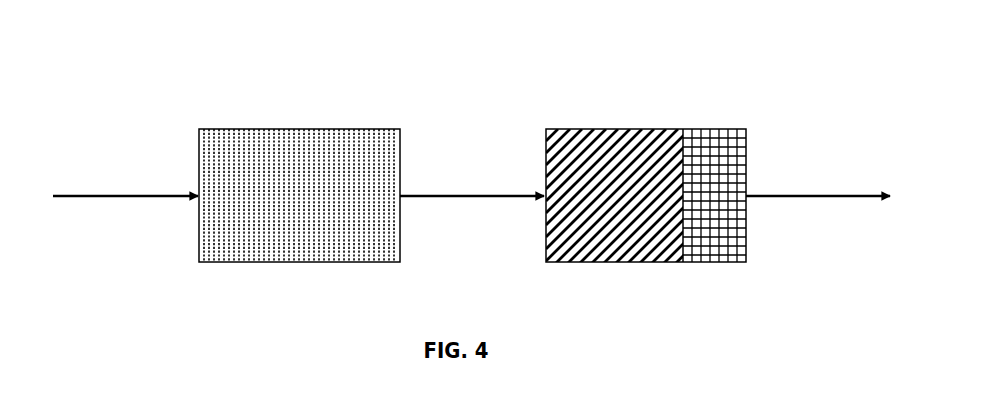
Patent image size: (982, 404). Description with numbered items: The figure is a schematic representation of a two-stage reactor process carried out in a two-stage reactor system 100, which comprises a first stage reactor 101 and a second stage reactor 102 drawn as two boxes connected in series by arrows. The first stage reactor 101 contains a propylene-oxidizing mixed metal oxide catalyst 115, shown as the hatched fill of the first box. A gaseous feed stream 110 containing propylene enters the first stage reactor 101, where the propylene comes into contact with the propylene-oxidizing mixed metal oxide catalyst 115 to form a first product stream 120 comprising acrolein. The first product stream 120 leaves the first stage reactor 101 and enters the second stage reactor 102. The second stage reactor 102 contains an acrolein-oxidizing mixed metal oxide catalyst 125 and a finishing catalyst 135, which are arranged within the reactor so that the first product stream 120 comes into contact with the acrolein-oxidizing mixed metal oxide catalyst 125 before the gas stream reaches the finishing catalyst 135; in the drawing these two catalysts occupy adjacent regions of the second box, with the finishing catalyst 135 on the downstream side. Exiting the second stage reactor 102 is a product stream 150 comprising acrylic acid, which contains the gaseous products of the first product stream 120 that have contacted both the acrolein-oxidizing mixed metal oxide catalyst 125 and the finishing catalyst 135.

The two-stage reactor system 100 is at (53, 40).
The first stage reactor 101 is at (299, 180).
The second stage reactor 102 is at (646, 180).
The gaseous feed stream 110 is at (125, 179).
The propylene-oxidizing mixed metal oxide catalyst 115 is at (302, 232).
The first product stream 120 is at (472, 179).
The acrolein-oxidizing mixed metal oxide catalyst 125 is at (622, 232).
The finishing catalyst 135 is at (715, 232).
The product stream 150 is at (818, 179).